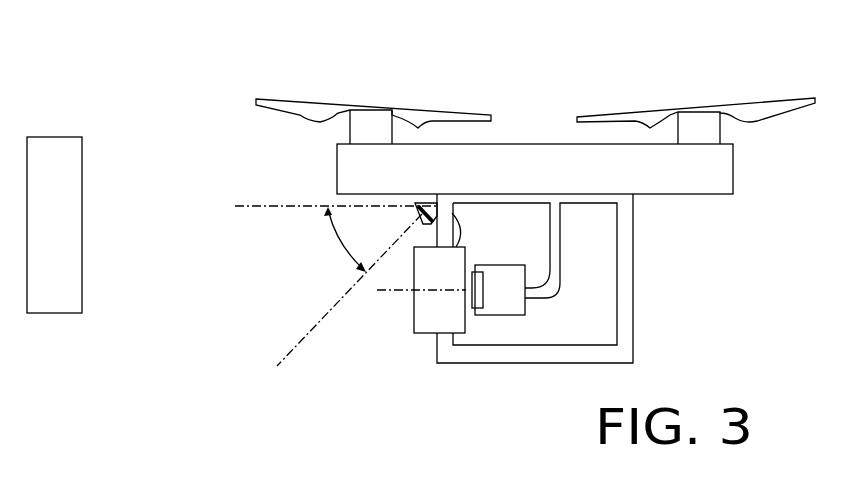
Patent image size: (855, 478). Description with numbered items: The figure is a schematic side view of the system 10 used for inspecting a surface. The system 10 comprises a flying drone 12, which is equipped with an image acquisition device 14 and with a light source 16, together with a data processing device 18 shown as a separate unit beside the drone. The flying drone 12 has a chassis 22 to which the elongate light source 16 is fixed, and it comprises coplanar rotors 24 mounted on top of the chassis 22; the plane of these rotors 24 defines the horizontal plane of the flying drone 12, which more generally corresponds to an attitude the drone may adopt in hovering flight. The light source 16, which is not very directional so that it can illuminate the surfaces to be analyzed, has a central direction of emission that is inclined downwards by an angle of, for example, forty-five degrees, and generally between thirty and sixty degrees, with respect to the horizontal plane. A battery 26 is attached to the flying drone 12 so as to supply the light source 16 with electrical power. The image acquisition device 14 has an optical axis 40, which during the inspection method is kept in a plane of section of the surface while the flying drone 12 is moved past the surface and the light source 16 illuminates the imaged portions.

The system 10 is at (190, 318).
The flying drone 12 is at (232, 159).
The image acquisition device 14 is at (503, 305).
The light source 16 is at (432, 205).
The data processing device 18 is at (47, 293).
The chassis 22 is at (683, 162).
The rotors 24 is at (420, 117).
The battery 26 is at (453, 334).
The optical axis 40 is at (385, 292).